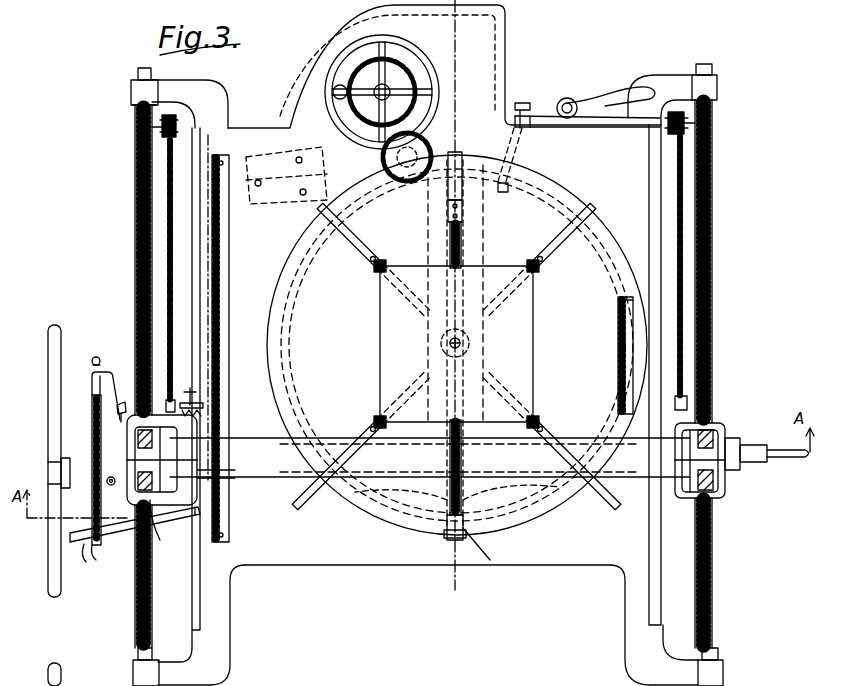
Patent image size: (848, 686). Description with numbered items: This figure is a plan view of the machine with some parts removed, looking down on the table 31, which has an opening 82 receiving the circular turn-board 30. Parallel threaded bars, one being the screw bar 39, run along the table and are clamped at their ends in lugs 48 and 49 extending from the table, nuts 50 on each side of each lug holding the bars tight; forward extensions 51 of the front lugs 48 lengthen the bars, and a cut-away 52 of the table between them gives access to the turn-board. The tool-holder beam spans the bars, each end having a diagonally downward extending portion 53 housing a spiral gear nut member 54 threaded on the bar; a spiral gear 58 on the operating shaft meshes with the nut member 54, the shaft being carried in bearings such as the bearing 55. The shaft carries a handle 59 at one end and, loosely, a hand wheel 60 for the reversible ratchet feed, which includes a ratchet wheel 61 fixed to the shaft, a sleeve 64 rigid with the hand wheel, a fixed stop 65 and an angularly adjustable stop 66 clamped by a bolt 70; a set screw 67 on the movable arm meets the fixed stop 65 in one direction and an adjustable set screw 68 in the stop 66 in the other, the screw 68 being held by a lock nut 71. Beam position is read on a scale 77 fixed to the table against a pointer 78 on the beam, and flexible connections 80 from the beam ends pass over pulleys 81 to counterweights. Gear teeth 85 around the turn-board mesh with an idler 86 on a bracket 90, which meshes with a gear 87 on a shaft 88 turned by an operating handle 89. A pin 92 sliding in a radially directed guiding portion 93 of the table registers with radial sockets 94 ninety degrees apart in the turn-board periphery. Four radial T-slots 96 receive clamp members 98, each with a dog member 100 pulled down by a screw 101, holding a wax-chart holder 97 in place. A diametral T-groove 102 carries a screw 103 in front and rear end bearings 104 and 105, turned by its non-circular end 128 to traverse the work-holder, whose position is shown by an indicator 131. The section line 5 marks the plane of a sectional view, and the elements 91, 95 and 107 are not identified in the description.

The section line 5- 5 is at (454, 22).
The turn-board 30 is at (457, 345).
The table 31 is at (585, 515).
The screw bar 39 is at (135, 216).
The lug 48 is at (428, 625).
The lug 49 is at (422, 101).
The nut 50 is at (131, 90).
The forward extension 51 is at (232, 660).
The cut-away 52 is at (232, 603).
The diagonally downward extending portion 53 is at (140, 500).
The spiral gear nut member 54 is at (210, 432).
The bearing 55 is at (286, 478).
The spiral gear 58 is at (128, 440).
The handle 59 is at (790, 456).
The hand wheel 60 is at (48, 392).
The ratchet wheel 61 is at (92, 412).
The sleeve 64 is at (64, 483).
The fixed stop 65 is at (91, 562).
The adjustable stop 66 is at (121, 402).
The set screw 67 is at (100, 540).
The adjustable set screw 68 is at (97, 357).
The bolt 70 is at (119, 491).
The lock nut 71 is at (101, 374).
The scale 77 is at (229, 310).
The pointer 78 is at (204, 404).
The flexible connection 80 is at (168, 170).
The pulley 81 is at (160, 125).
The opening 82 is at (285, 322).
The gear teeth 85 is at (470, 345).
The idler 86 is at (418, 140).
The gear 87 is at (405, 70).
The shaft 88 is at (420, 70).
The operating handle 89 is at (334, 88).
The bracket 90 is at (278, 205).
The pointer 91 is at (618, 384).
The pin 92 is at (532, 162).
The guiding portion 93 is at (520, 148).
The radial socket 94 is at (290, 298).
The lever 95 is at (600, 106).
The radial T-slot 96 is at (335, 226).
The holder 97 is at (520, 322).
The clamp member 98 is at (378, 270).
The dog member 100 is at (372, 272).
The screw 101 is at (378, 258).
The diametral T-groove 102 is at (465, 528).
The screw 103 is at (480, 505).
The front end bearing 104 is at (448, 540).
The rear end bearing 105 is at (460, 208).
The stay 107 is at (420, 506).
The non-circular end 128 is at (485, 566).
The indicator 131 is at (628, 297).